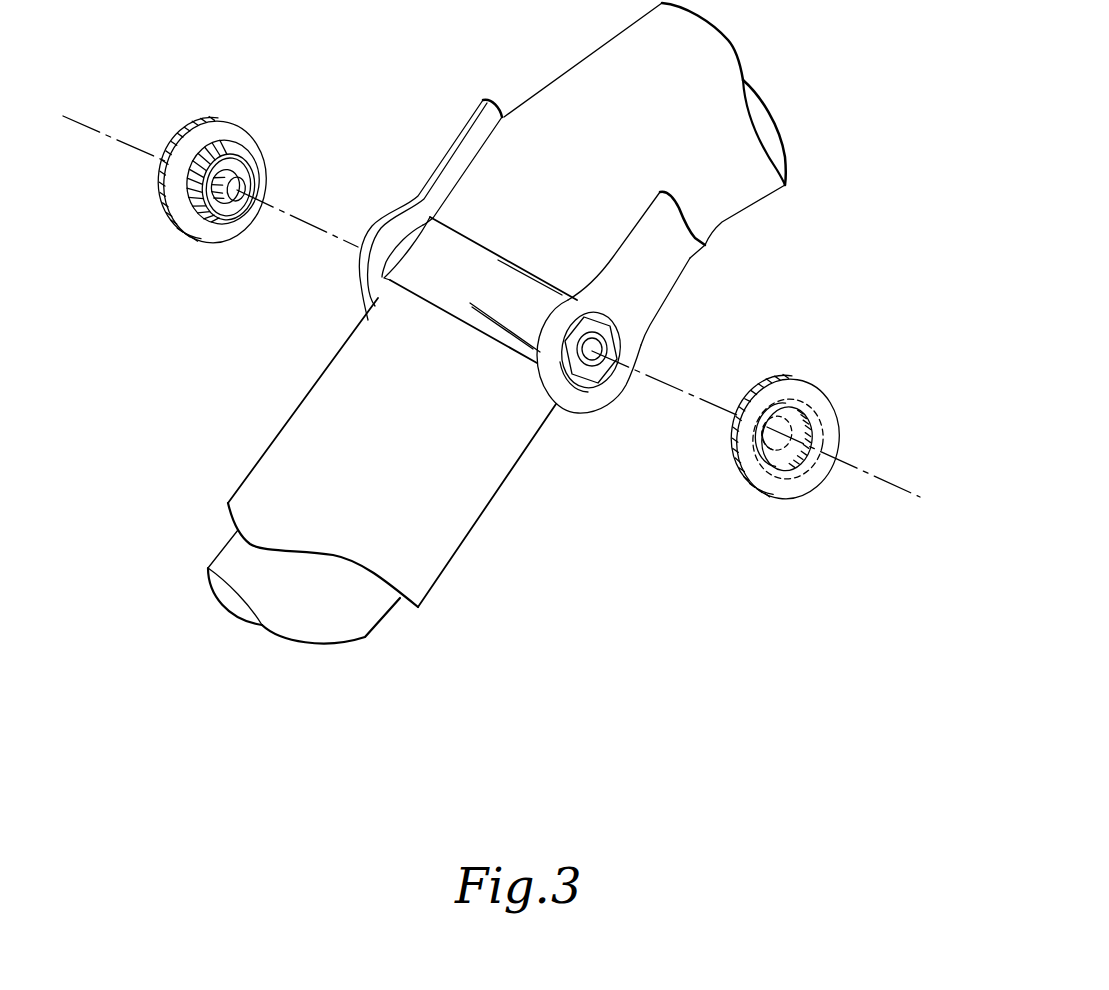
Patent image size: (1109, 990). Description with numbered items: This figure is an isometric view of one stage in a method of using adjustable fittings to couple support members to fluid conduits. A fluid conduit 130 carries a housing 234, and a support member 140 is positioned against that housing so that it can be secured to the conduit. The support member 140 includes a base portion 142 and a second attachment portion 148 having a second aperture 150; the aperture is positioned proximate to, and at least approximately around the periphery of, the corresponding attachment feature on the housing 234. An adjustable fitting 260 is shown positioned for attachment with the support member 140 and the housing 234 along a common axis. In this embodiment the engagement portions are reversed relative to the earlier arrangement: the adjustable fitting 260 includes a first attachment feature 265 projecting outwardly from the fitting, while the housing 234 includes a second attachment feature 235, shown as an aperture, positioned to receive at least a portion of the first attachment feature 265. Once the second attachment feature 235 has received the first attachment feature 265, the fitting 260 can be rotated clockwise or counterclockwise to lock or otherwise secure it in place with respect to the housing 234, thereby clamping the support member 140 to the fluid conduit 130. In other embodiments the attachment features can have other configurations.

The fluid conduit 130 is at (280, 418).
The support member 140 is at (485, 97).
The base portion 142 is at (688, 252).
The second attachment portion 148 is at (373, 213).
The second aperture 150 is at (360, 278).
The housing 234 is at (487, 333).
The second attachment feature 235 is at (576, 366).
The adjustable fitting 260 is at (177, 248).
The first attachment feature 265 is at (242, 178).